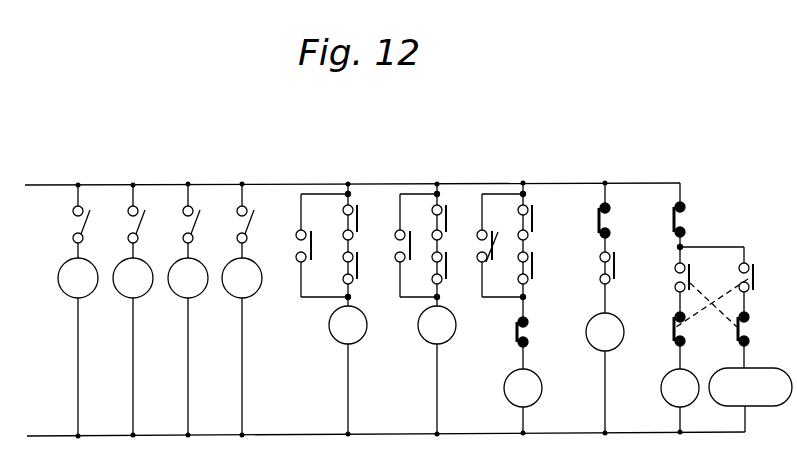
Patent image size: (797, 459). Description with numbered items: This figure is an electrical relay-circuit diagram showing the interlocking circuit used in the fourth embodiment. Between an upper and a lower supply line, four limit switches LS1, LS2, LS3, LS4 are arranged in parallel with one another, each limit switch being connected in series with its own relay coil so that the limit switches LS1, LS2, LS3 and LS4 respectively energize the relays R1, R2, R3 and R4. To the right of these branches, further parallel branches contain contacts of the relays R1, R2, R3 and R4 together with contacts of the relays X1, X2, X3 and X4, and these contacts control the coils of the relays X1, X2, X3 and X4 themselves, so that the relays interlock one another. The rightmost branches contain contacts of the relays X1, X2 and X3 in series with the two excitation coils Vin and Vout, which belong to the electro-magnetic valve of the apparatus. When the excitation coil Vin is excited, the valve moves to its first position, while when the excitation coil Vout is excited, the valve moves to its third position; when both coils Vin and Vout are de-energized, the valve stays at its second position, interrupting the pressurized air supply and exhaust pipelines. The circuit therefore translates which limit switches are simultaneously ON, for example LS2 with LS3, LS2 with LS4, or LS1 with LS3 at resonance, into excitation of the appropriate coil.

The limit switch LS1 is at (64, 221).
The limit switch LS2 is at (119, 221).
The limit switch LS3 is at (174, 221).
The limit switch LS4 is at (228, 221).
The relay R1 is at (350, 319).
The relay R2 is at (293, 320).
The relay R3 is at (405, 343).
The relay R4 is at (348, 343).
The relay X1 is at (539, 309).
The relay X2 is at (589, 309).
The relay X3 is at (596, 308).
The relay X4 is at (570, 308).
The excitation coil Vin is at (680, 400).
The excitation coil Vout is at (750, 400).